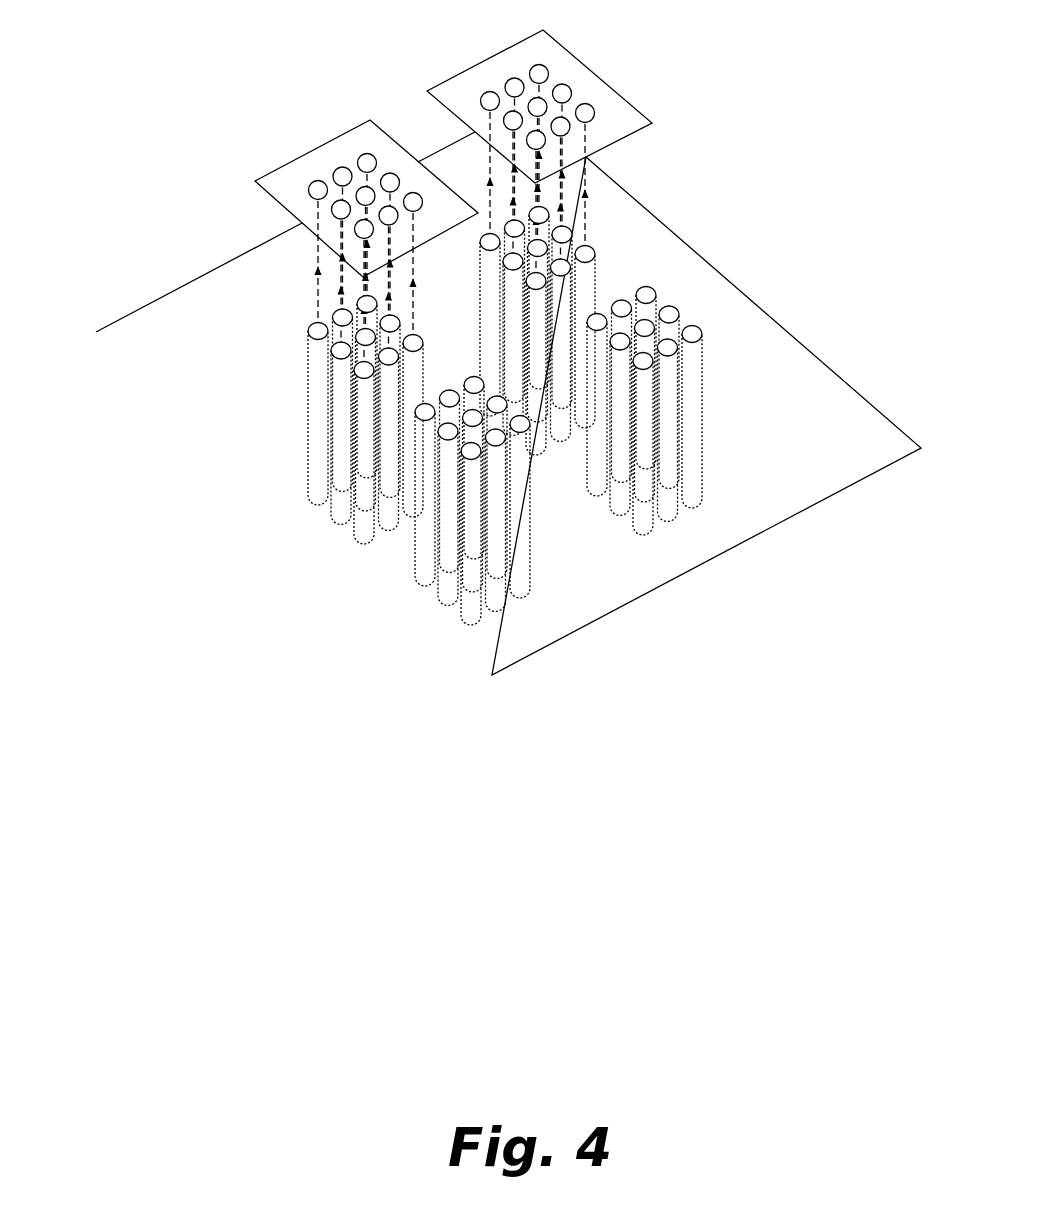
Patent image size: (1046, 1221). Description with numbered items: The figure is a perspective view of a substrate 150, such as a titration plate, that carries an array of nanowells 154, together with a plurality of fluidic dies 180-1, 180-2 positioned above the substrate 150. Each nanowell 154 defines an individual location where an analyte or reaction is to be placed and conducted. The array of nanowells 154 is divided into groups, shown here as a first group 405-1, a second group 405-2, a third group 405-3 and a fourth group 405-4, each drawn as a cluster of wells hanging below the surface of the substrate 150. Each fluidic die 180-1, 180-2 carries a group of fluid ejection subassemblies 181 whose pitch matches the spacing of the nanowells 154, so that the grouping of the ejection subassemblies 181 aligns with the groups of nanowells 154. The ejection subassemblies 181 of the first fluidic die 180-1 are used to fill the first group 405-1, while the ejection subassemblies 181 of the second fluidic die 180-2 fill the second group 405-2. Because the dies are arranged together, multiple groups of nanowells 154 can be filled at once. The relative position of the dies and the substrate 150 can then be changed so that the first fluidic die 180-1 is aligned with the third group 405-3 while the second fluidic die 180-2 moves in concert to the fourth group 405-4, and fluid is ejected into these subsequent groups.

The substrate 150 is at (157, 330).
The nanowell 154 is at (306, 325).
The first fluidic die 180-1 is at (278, 186).
The second fluidic die 180-2 is at (451, 93).
The ejection subassembly 181 is at (346, 186).
The first group of nanowells 405-1 is at (284, 419).
The second group of nanowells 405-2 is at (528, 300).
The third group of nanowells 405-3 is at (544, 440).
The fourth group of nanowells 405-4 is at (634, 382).